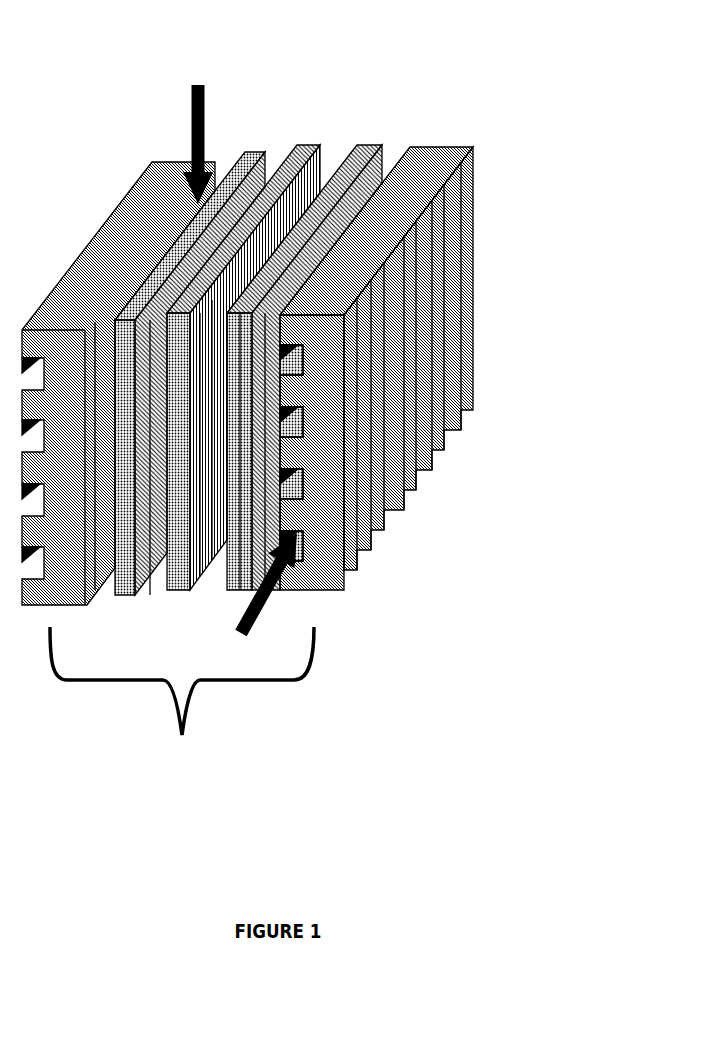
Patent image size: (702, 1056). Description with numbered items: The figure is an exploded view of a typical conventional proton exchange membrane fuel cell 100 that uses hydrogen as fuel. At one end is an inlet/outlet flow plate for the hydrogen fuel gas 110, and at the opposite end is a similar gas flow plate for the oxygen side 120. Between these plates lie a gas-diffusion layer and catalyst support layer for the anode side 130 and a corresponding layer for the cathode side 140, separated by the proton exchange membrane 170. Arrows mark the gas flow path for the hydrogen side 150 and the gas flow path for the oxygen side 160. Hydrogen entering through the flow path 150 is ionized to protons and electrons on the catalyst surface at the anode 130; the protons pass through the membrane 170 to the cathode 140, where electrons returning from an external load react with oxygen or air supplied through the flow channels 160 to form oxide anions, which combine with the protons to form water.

The proton exchange membrane fuel cell 100 is at (182, 704).
The inlet/outlet flow plate for the hydrogen fuel gas 110 is at (124, 200).
The gas flow plate for the oxygen side 120 is at (480, 180).
The gas-diffusion layer and catalyst support layer for the anode side 130 is at (237, 165).
The gas-diffusion layer and catalyst support layer for the cathode side 140 is at (382, 145).
The gas flow path for the hydrogen side 150 is at (185, 78).
The gas flow path for the oxygen side 160 is at (271, 600).
The proton exchange membrane 170 is at (309, 148).